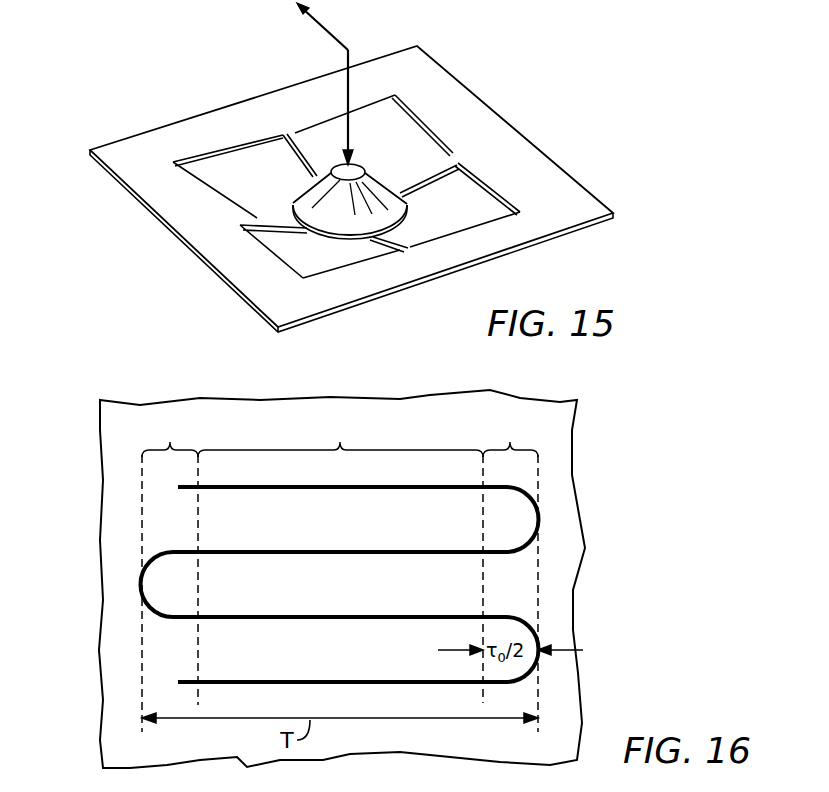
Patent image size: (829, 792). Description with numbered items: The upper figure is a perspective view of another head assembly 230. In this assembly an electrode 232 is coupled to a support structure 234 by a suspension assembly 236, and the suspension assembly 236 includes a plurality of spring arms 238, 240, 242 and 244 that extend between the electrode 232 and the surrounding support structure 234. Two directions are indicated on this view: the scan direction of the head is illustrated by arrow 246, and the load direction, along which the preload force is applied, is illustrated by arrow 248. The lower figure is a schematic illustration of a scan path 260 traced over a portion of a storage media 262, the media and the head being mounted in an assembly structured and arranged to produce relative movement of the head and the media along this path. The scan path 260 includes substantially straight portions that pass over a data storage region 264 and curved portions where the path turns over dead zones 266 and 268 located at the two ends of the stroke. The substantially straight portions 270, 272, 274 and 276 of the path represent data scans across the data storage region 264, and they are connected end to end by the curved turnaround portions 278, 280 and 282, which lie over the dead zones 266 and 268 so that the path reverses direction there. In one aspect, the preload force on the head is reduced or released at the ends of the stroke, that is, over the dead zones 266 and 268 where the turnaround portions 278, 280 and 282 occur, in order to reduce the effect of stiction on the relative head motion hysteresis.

In FIG. 15, the head assembly 230 is at (530, 87).
In FIG. 15, the electrode 232 is at (374, 180).
In FIG. 15, the support structure 234 is at (533, 182).
In FIG. 15, the suspension assembly 236 is at (424, 219).
In FIG. 15, the spring arm 238 is at (437, 167).
In FIG. 15, the spring arm 240 is at (287, 148).
In FIG. 15, the spring arm 242 is at (258, 218).
In FIG. 15, the spring arm 244 is at (380, 236).
In FIG. 15, the arrow 246 is at (320, 26).
In FIG. 15, the arrow 248 is at (348, 100).
In FIG. 16, the scan path 260 is at (357, 556).
In FIG. 16, the storage media 262 is at (577, 563).
In FIG. 16, the data storage region 264 is at (340, 435).
In FIG. 16, the dead zone 266 is at (170, 572).
In FIG. 16, the dead zone 268 is at (510, 572).
In FIG. 16, the substantially straight portion 270 is at (307, 491).
In FIG. 16, the substantially straight portion 272 is at (265, 556).
In FIG. 16, the substantially straight portion 274 is at (287, 619).
In FIG. 16, the substantially straight portion 276 is at (317, 684).
In FIG. 16, the curved turnaround portion 278 is at (526, 488).
In FIG. 16, the curved turnaround portion 280 is at (157, 613).
In FIG. 16, the curved turnaround portion 282 is at (522, 681).